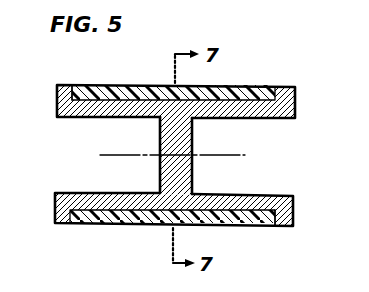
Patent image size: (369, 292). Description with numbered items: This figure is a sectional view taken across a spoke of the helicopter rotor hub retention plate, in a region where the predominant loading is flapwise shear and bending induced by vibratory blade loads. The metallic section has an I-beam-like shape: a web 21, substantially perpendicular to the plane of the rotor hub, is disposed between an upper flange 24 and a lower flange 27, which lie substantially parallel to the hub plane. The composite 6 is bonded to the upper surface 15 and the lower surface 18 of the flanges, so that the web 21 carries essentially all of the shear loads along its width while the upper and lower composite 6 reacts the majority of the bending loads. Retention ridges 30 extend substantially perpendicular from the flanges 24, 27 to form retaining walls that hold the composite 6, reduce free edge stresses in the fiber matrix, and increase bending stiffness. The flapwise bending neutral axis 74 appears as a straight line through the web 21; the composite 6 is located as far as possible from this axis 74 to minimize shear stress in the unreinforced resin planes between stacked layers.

The composite 6 is at (148, 84).
The upper surface 15 is at (245, 99).
The lower surface 18 is at (238, 228).
The web 21 is at (160, 130).
The upper flange 24 is at (281, 119).
The lower flange 27 is at (283, 195).
The retention ridges 30 is at (67, 85).
The flapwise bending neutral axis 74 is at (222, 155).